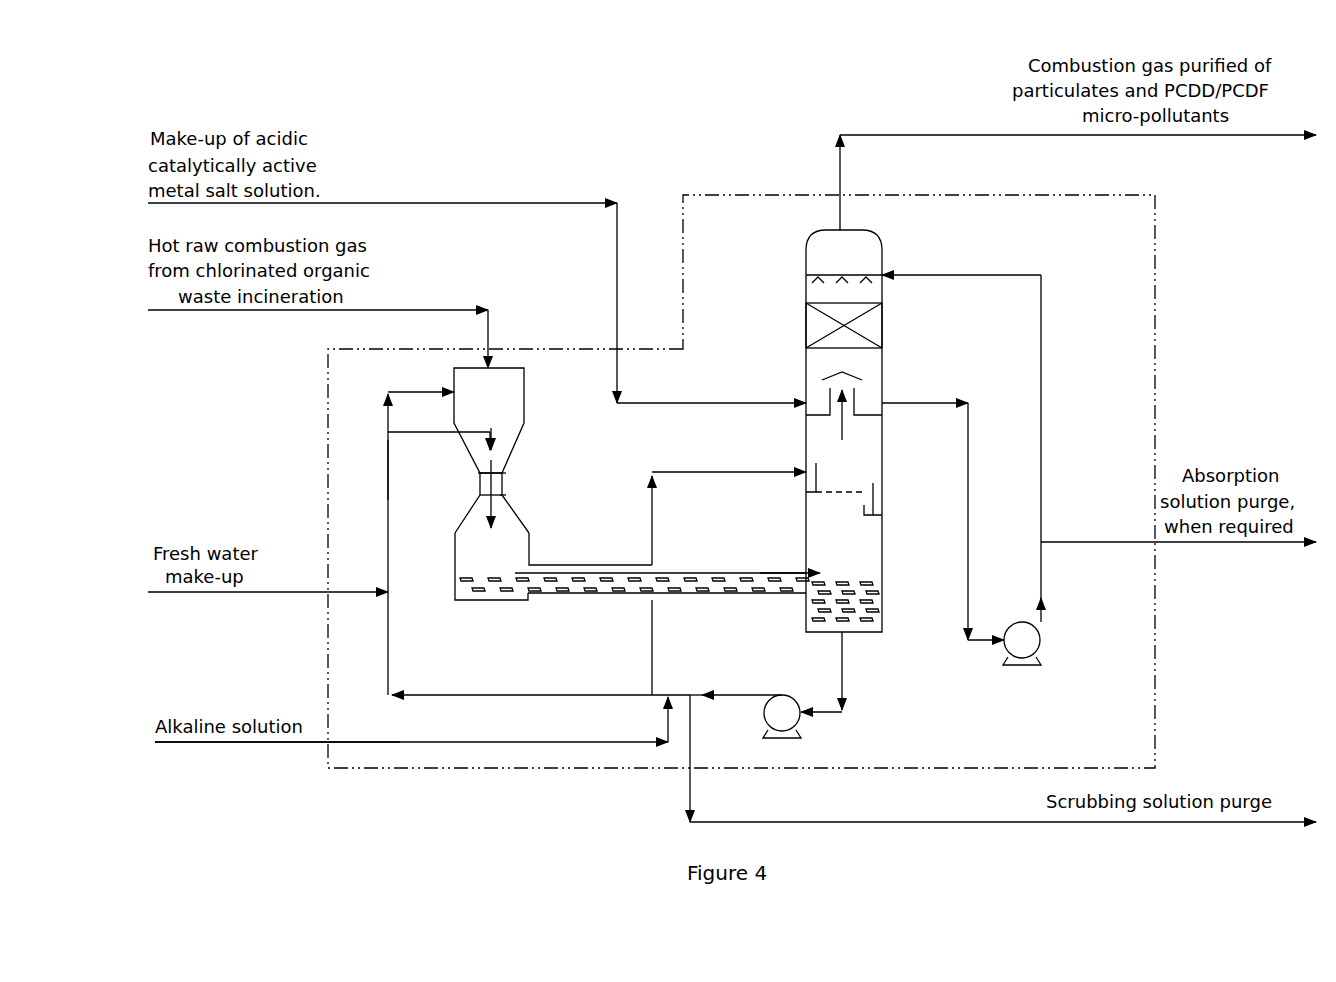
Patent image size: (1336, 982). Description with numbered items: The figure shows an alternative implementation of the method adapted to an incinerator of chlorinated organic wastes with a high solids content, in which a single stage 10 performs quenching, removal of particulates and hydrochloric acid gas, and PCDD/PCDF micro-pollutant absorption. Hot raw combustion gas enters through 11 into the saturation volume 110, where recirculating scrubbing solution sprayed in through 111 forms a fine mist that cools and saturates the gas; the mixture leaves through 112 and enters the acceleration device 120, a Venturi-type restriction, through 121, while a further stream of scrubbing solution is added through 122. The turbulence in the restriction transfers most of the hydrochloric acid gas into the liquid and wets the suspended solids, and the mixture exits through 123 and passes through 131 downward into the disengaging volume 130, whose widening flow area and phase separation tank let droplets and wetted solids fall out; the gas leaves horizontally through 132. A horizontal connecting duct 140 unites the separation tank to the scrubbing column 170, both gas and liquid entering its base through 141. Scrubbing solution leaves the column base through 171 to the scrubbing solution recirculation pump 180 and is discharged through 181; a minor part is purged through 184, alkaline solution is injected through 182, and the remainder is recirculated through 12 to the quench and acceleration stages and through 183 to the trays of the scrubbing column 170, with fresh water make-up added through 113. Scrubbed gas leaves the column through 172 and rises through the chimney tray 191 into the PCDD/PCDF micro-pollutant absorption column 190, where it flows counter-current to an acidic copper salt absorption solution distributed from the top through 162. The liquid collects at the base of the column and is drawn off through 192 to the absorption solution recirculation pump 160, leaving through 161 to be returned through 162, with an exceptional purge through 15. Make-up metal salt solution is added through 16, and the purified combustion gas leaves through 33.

The stage 10 is at (700, 195).
The raw combustion gas inlet 11 is at (460, 306).
The recirculating scrubbing solution line 12 is at (386, 466).
The absorption solution purge stream 15 is at (1051, 542).
The make-up solution inlet 16 is at (504, 185).
The purified combustion gas outlet 33 is at (901, 135).
The saturation volume 110 is at (523, 405).
The scrubbing solution inlet to saturation volume 111 is at (431, 392).
The saturation volume outlet 112 is at (481, 473).
The fresh water make-up inlet 113 is at (254, 592).
The acceleration device 120 is at (478, 488).
The acceleration device inlet 121 is at (502, 473).
The scrubbing solution inlet to acceleration device 122 is at (458, 437).
The acceleration device outlet 123 is at (502, 492).
The disengaging volume 130 is at (454, 550).
The disengaging volume inlet 131 is at (460, 512).
The disengaging volume gas outlet 132 is at (534, 584).
The horizontal connecting duct 140 is at (644, 595).
The connecting duct outlet 141 is at (770, 576).
The absorption solution recirculation pump 160 is at (1032, 650).
The absorption pump discharge 161 is at (1041, 619).
The absorption solution return line 162 is at (1041, 462).
The scrubbing column 170 is at (806, 474).
The scrubbing solution outlet 171 is at (842, 640).
The scrubbing column gas outlet 172 is at (836, 426).
The scrubbing solution recirculation pump 180 is at (764, 714).
The scrubbing pump discharge 181 is at (696, 694).
The alkaline solution inlet 182 is at (258, 742).
The scrubbing solution inlet to scrubbing column 183 is at (652, 546).
The scrubbing solution purge 184 is at (782, 820).
The PCDD/PCDF micro-pollutant absorption column 190 is at (804, 324).
The chimney tray gas inlet 191 is at (854, 404).
The absorption solution outlet 192 is at (922, 404).